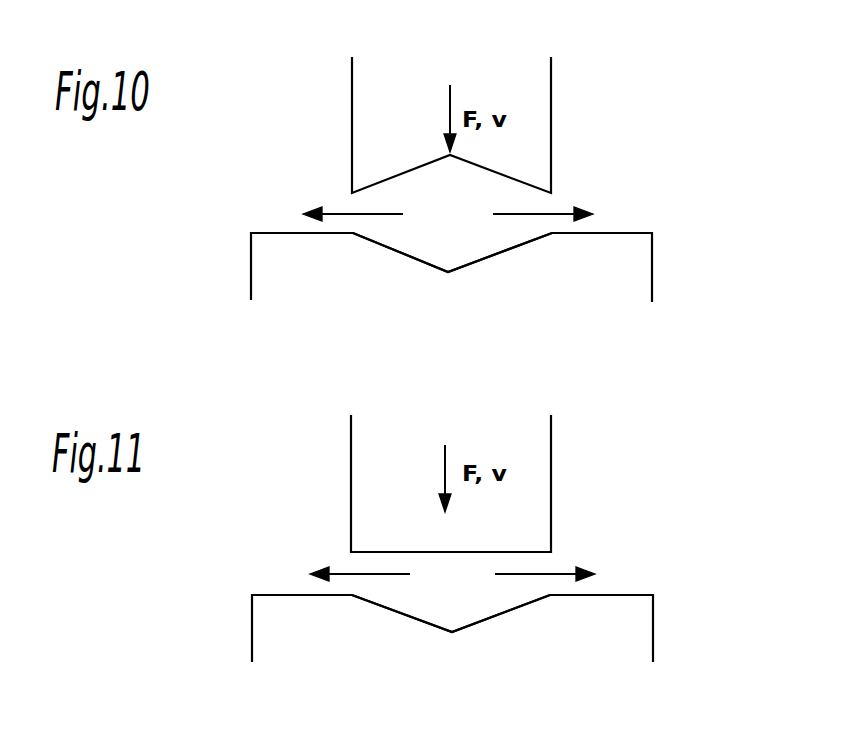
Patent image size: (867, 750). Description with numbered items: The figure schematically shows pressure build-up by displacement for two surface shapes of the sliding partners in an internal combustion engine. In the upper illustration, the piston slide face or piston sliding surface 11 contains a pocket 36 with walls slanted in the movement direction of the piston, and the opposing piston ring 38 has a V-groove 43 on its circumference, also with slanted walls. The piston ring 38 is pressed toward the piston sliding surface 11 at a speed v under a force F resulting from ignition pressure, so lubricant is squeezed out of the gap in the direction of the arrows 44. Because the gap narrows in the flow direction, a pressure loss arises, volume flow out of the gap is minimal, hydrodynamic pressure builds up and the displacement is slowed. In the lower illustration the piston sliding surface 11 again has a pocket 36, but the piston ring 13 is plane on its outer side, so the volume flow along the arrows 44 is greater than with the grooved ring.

In FIG. 10, the piston sliding surface 11 is at (603, 230).
In FIG. 11, the piston sliding surface 11 is at (630, 590).
In FIG. 11, the piston ring 13 is at (530, 498).
In FIG. 10, the pocket 36 is at (472, 253).
In FIG. 11, the pocket 36 is at (477, 617).
In FIG. 10, the piston ring 38 is at (540, 127).
In FIG. 10, the V-groove 43 is at (520, 178).
In FIG. 10, the arrows 44 is at (345, 214).
In FIG. 11, the arrows 44 is at (358, 573).